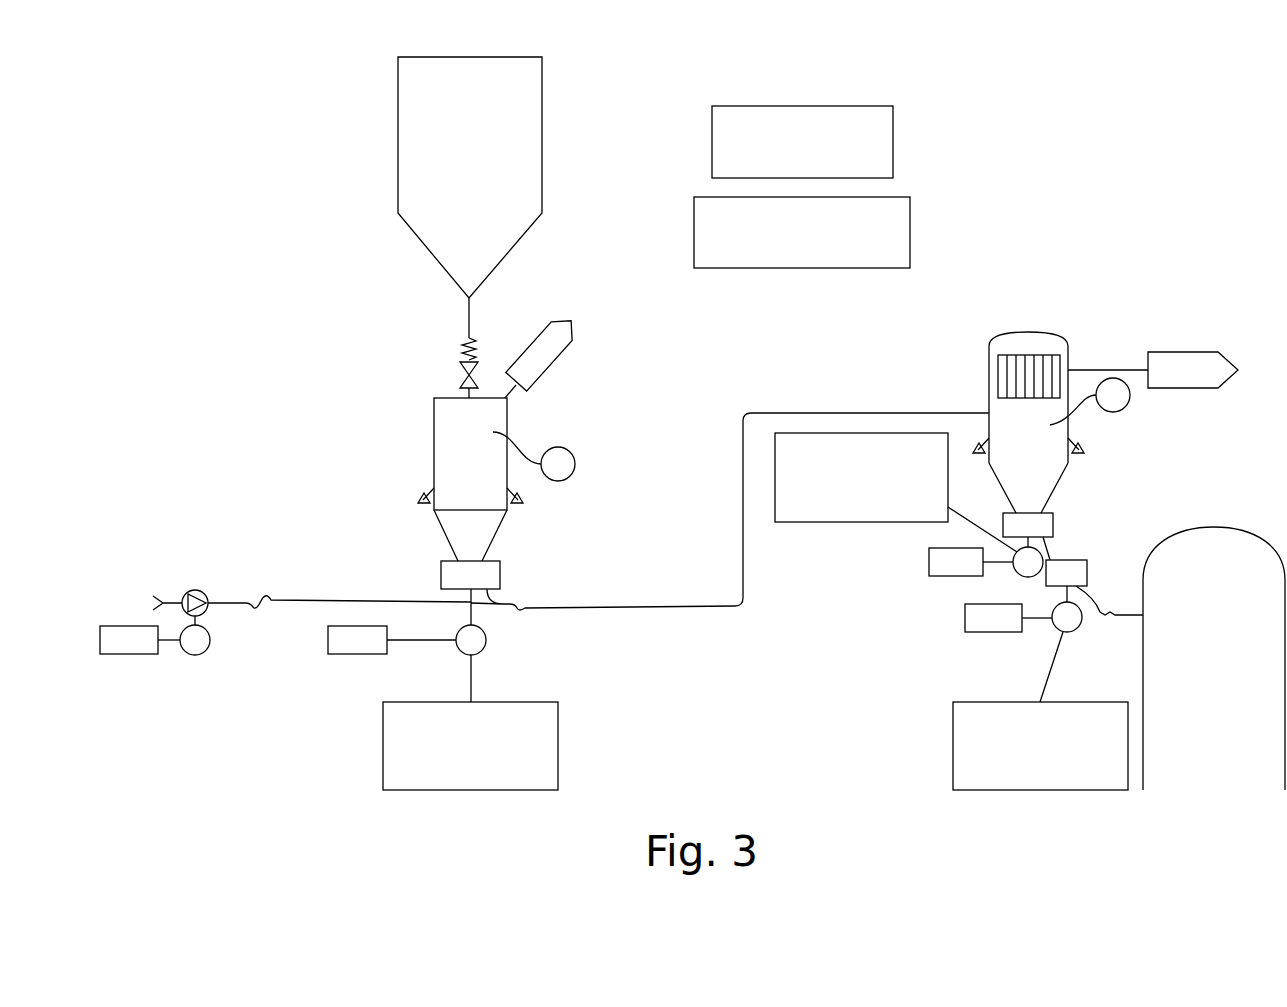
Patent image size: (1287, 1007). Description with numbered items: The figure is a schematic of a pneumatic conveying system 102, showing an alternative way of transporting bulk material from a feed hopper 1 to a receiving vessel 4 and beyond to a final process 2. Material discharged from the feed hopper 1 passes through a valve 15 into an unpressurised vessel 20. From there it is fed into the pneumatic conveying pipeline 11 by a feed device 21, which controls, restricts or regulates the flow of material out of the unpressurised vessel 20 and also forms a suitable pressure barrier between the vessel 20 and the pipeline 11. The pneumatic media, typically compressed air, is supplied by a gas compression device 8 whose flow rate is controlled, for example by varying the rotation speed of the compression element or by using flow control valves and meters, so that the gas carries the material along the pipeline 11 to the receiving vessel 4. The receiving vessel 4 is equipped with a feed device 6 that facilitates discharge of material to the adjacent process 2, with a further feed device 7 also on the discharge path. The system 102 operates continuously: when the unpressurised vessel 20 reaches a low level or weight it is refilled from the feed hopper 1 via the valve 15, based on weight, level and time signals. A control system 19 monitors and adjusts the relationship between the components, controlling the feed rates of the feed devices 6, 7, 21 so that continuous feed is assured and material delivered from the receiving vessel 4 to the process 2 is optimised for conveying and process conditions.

The pneumatic conveying system 102 is at (648, 84).
The feed hopper 1 is at (530, 97).
The valve 15 is at (463, 378).
The unpressurised vessel 20 is at (434, 420).
The feed device 21 is at (500, 573).
The gas compression device 8 is at (197, 590).
The pneumatic conveying pipeline 11 is at (615, 606).
The receiving vessel 4 is at (1070, 462).
The feed device 6 is at (1060, 522).
The feed device 7 is at (1080, 574).
The process 2 is at (1222, 528).
The control system 19 is at (893, 118).